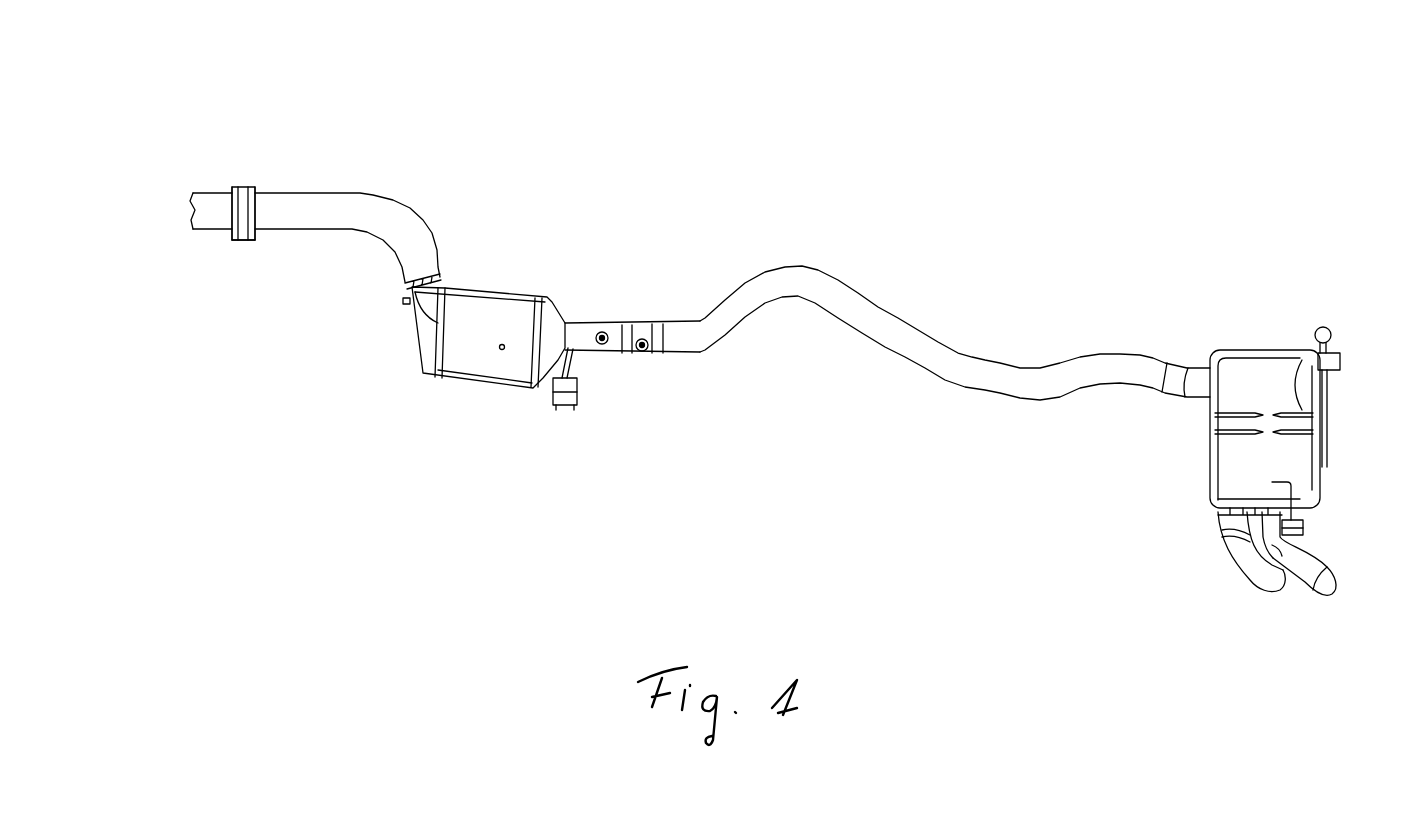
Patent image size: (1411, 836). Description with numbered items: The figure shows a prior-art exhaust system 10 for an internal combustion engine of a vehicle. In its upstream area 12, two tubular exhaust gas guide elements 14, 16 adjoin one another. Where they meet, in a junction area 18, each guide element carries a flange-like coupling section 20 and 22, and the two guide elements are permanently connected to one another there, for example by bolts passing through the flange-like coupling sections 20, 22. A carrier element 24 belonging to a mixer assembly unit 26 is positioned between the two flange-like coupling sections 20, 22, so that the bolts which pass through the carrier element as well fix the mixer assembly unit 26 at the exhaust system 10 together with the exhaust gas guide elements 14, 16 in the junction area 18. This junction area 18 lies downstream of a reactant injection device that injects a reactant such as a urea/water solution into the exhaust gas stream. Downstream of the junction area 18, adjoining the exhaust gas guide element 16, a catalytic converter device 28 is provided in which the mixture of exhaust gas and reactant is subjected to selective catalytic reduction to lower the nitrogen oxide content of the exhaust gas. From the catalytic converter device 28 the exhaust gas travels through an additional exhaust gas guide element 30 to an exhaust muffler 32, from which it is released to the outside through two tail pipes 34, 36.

The exhaust system 10 is at (1057, 202).
The upstream area 12 is at (133, 183).
The exhaust gas guide element 14 is at (200, 230).
The exhaust gas guide element 16 is at (360, 193).
The junction area 18 is at (267, 265).
The flange-like coupling section 20 is at (233, 187).
The flange-like coupling section 22 is at (259, 186).
The carrier element 24 is at (245, 240).
The mixer assembly unit 26 is at (245, 155).
The catalytic converter device 28 is at (477, 362).
The additional exhaust gas guide element 30 is at (898, 317).
The exhaust muffler 32 is at (1232, 458).
The tail pipe 34 is at (1247, 580).
The tail pipe 36 is at (1312, 557).